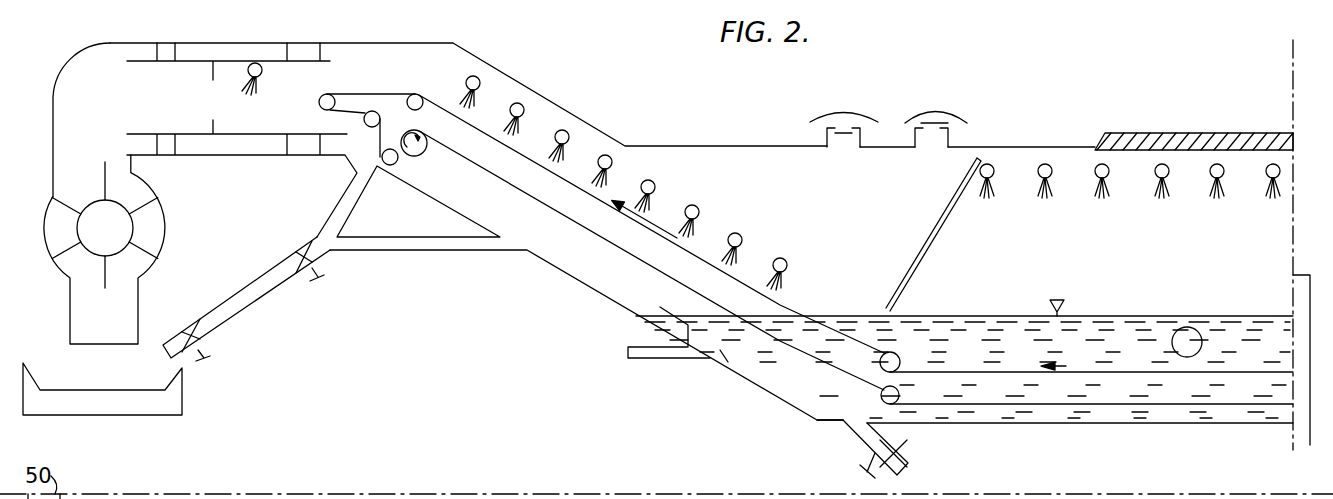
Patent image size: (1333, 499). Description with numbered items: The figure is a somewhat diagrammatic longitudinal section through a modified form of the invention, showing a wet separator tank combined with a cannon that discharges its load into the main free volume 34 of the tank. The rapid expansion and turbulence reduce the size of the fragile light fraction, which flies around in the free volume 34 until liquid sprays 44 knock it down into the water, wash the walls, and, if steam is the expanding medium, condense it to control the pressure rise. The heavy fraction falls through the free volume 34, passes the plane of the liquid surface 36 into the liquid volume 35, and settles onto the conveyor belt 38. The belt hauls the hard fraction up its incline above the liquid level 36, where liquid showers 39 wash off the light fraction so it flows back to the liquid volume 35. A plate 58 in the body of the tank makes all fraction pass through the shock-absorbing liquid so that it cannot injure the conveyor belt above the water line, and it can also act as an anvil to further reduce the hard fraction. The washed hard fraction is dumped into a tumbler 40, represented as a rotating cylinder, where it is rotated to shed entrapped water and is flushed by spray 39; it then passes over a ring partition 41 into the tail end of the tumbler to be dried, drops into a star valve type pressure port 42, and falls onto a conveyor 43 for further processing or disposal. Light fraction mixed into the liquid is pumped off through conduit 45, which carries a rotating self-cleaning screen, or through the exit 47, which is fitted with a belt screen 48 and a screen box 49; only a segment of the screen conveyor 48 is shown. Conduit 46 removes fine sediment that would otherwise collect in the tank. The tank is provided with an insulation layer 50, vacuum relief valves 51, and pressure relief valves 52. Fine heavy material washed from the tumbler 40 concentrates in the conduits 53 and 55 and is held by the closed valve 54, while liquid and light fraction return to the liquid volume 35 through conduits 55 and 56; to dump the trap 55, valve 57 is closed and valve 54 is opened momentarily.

The free volume 34 is at (1182, 261).
The liquid volume 35 is at (1115, 363).
The liquid surface 36 is at (1162, 315).
The conveyor belt 38 is at (973, 371).
The liquid showers 39 is at (262, 71).
The tumbler 40 is at (340, 58).
The ring partition 41 is at (213, 125).
The star valve type pressure port 42 is at (72, 187).
The conveyor 43 is at (48, 390).
The liquid sprays 44 is at (993, 175).
The conduit 45 is at (1201, 350).
The conduit 46 is at (905, 470).
The exit 47 is at (636, 346).
The belt screen 48 is at (753, 363).
The screen box 49 is at (713, 350).
The insulation layer 50 is at (1180, 133).
The vacuum relief valves 51 is at (830, 108).
The pressure relief valves 52 is at (953, 113).
The conduit 53 is at (350, 210).
The closed valve 54 is at (207, 352).
The conduit 55 is at (271, 297).
The conduit 56 is at (445, 251).
The valve 57 is at (319, 277).
The plate 58 is at (933, 240).